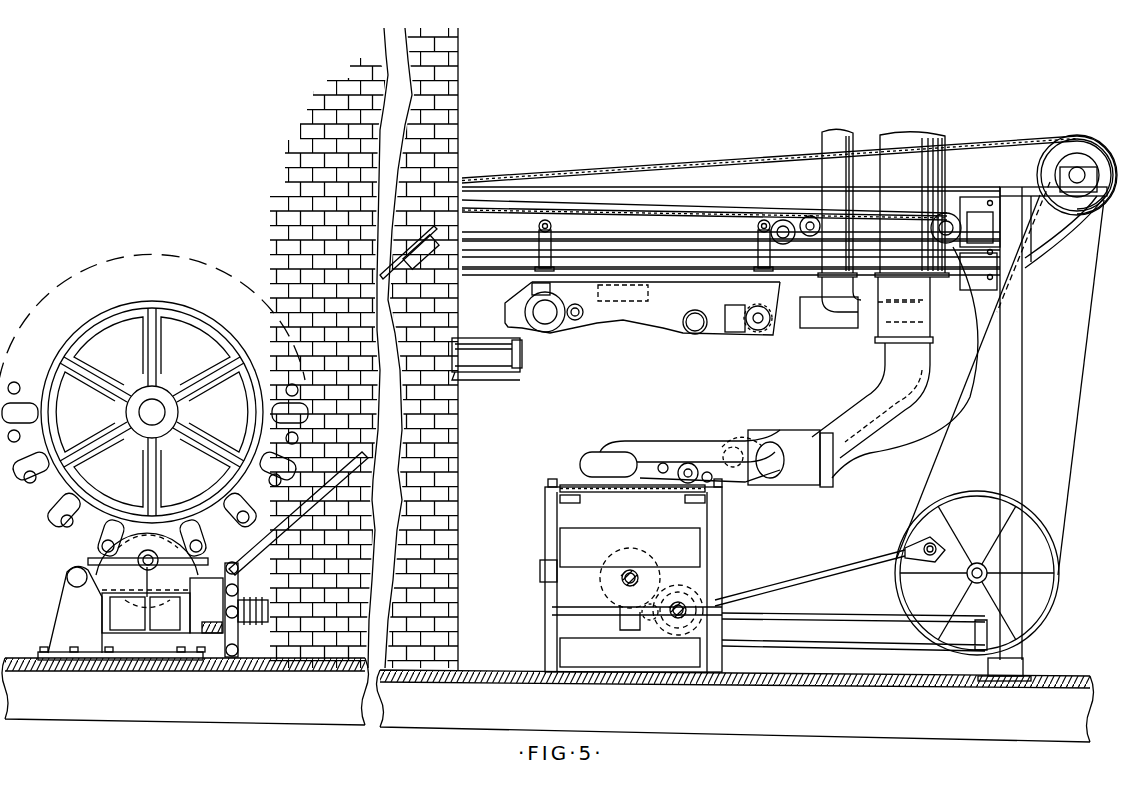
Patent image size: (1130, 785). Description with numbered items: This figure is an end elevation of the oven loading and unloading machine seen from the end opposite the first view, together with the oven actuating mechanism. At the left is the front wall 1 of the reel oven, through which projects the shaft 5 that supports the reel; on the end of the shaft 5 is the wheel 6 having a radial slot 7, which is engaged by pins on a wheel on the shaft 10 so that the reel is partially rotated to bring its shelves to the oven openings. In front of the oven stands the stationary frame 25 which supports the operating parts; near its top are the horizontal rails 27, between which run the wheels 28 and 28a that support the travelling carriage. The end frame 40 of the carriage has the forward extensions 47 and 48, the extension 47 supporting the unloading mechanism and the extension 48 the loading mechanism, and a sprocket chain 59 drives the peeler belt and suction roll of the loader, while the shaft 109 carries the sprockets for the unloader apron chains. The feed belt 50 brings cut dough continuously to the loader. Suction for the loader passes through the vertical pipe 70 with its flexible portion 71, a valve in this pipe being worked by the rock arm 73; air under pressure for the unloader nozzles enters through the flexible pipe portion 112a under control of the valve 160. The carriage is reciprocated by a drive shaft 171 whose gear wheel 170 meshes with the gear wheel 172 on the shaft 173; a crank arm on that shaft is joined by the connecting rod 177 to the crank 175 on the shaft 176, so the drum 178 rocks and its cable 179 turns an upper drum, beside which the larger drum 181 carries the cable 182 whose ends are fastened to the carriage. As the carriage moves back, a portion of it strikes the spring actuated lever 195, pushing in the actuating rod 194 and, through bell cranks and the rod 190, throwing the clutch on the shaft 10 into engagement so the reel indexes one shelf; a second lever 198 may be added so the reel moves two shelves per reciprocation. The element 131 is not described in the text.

The front wall 1 is at (460, 120).
The shaft 5 is at (161, 404).
The wheel 6 is at (247, 408).
The radial slot 7 is at (154, 406).
The shaft 10 is at (142, 566).
The frame 25 is at (1023, 357).
The horizontal rails 27 is at (675, 196).
The wheels 28 is at (962, 228).
The wheels 28a is at (812, 211).
The end frame 40 is at (887, 446).
The forward extension 47 is at (668, 329).
The forward extension 48 is at (668, 443).
The feed belt 50 is at (568, 482).
The sprocket chain 59 is at (727, 446).
The vertical pipe 70 is at (907, 404).
The flexible portion 71 is at (946, 186).
The rock arm 73 is at (872, 339).
The shaft 109 is at (758, 331).
The flexible portion 112a is at (832, 178).
The box 131 is at (504, 348).
The valve 160 is at (816, 329).
The gear wheel 170 is at (660, 576).
The drive shaft 171 is at (620, 579).
The gear wheel 172 is at (693, 594).
The shaft 173 is at (698, 613).
The crank 175 is at (954, 547).
The shaft 176 is at (968, 580).
The connecting rod 177 is at (816, 576).
The drum 178 is at (1059, 606).
The cable 179 is at (1076, 417).
The larger drum 181 is at (1071, 135).
The cable 182 is at (701, 161).
The rod 190 is at (288, 521).
The actuating rod 194 is at (502, 270).
The spring actuated lever 195 is at (553, 230).
The second lever 198 is at (760, 230).